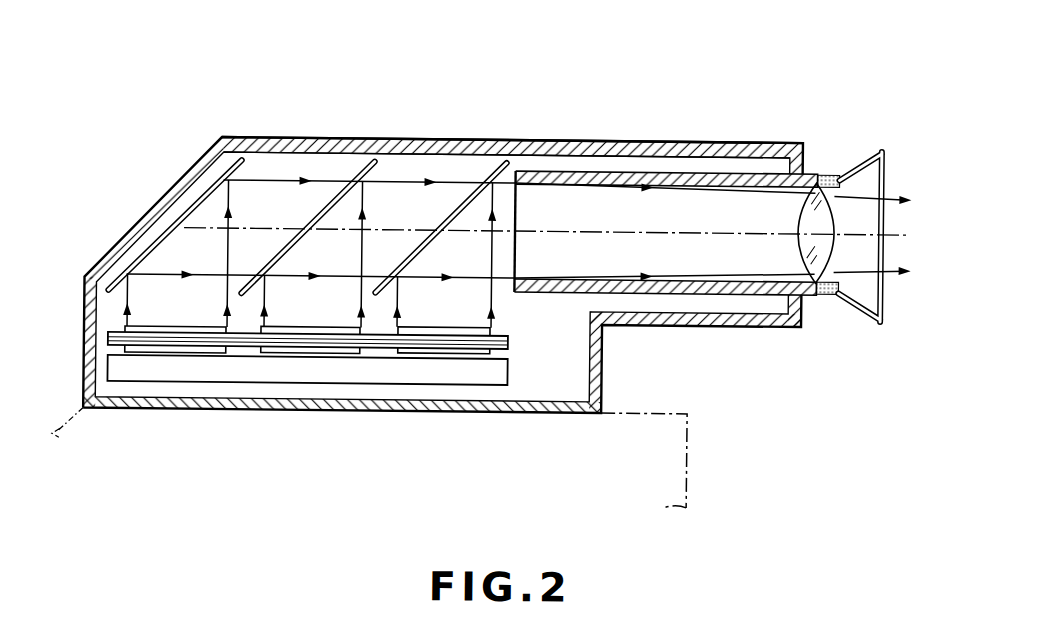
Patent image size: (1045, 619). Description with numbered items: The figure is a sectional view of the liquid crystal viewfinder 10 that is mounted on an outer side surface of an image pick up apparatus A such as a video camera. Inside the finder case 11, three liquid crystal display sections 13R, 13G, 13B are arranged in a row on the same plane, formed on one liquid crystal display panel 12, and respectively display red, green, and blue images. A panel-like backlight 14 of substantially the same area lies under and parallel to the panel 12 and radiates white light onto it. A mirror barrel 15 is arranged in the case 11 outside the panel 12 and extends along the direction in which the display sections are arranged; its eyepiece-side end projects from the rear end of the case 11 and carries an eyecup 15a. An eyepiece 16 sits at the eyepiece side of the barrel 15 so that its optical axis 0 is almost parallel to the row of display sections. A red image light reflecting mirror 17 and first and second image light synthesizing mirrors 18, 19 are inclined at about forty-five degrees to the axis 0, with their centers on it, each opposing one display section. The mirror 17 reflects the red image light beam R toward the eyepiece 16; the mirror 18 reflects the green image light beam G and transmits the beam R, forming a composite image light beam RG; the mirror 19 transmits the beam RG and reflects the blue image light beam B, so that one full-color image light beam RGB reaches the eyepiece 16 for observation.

The liquid crystal viewfinder 10 is at (722, 128).
The finder case 11 is at (516, 134).
The liquid crystal display panel 12 is at (519, 339).
The red liquid crystal display section 13R is at (172, 354).
The green liquid crystal display section 13G is at (300, 353).
The blue liquid crystal display section 13B is at (451, 352).
The backlight 14 is at (128, 373).
The mirror barrel 15 is at (712, 289).
The eyecup 15a is at (867, 301).
The eyepiece 16 is at (812, 257).
The red image light reflecting mirror 17 is at (198, 174).
The first image light synthesizing mirror 18 is at (336, 190).
The second image light synthesizing mirror 19 is at (455, 201).
The optical axis 0 is at (628, 224).
The image pick up apparatus A is at (700, 416).
The red image light beam R is at (280, 178).
The green image light beam G is at (360, 291).
The blue image light beam B is at (490, 288).
The composite image light beam RG is at (405, 179).
The full-color image light beam RGB is at (874, 181).